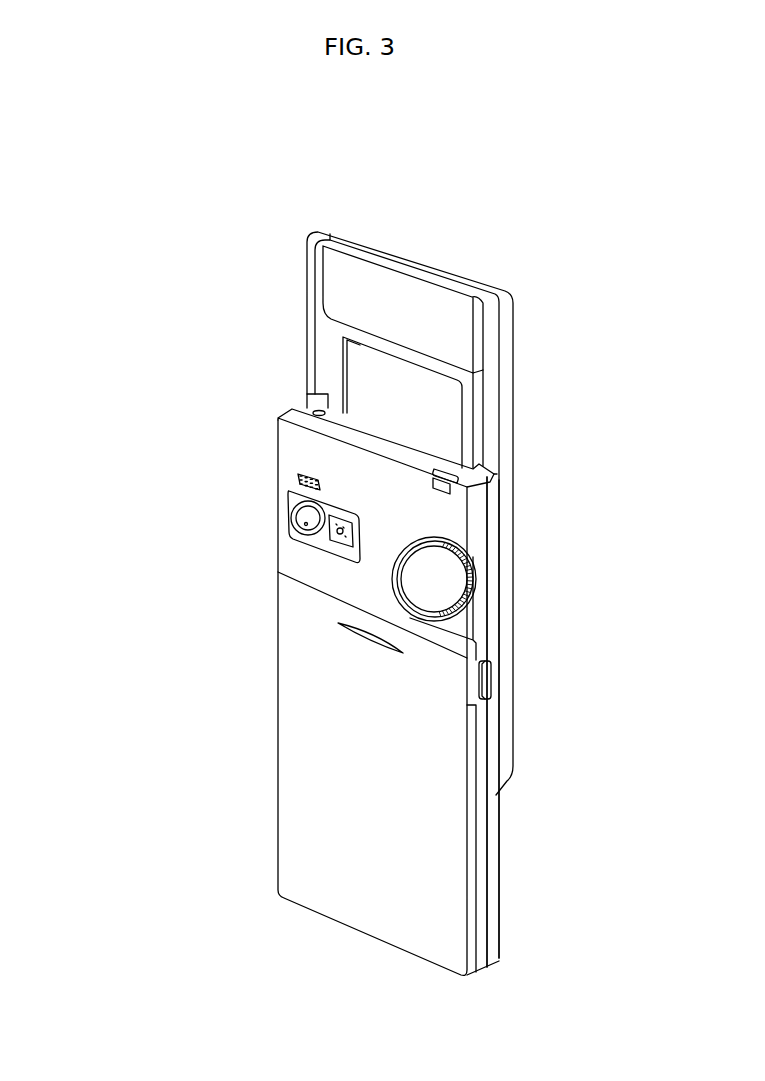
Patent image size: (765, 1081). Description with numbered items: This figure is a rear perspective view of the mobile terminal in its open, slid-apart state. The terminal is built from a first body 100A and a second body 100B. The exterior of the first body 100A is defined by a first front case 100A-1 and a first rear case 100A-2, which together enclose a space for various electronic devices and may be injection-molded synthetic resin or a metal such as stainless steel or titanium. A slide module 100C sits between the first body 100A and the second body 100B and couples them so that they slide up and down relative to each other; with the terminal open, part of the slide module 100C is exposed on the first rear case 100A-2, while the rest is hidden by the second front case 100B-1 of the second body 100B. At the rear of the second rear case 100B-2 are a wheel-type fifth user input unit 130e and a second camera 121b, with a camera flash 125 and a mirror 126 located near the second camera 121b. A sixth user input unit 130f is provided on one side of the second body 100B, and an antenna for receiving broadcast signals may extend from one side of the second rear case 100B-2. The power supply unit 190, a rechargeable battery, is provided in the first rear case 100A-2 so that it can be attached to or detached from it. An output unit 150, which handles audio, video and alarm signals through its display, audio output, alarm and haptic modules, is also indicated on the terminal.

The first body 100A is at (202, 264).
The first front case 100A-1 is at (362, 237).
The first rear case 100A-2 is at (331, 237).
The slide module 100C is at (367, 370).
The second body 100B is at (170, 609).
The output unit 150 is at (312, 413).
The camera flash 125 is at (298, 477).
The second camera 121b is at (302, 516).
The mirror 126 is at (335, 537).
The fifth user input unit 130e is at (475, 597).
The sixth user input unit 130f is at (490, 680).
The power supply unit 190 is at (313, 743).
The second front case 100B-1 is at (490, 840).
The second rear case 100B-2 is at (482, 888).